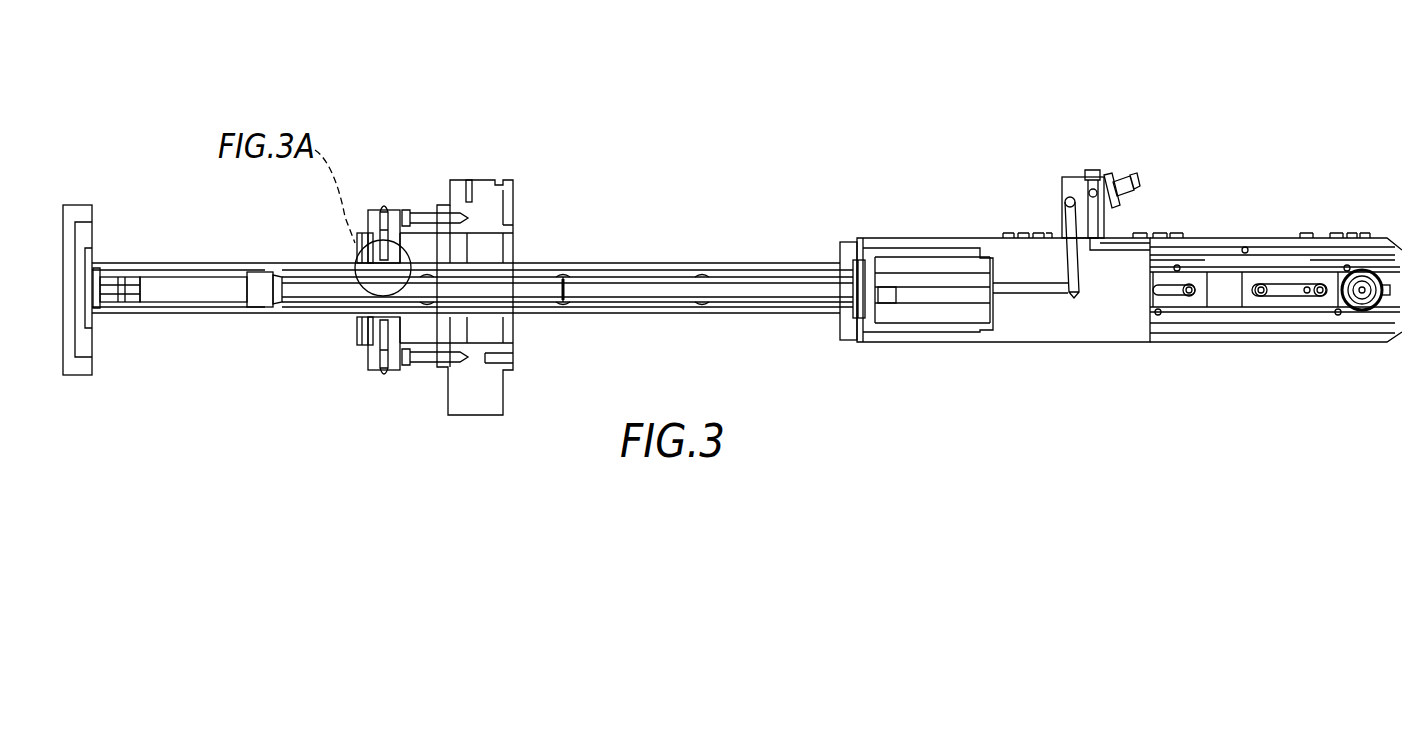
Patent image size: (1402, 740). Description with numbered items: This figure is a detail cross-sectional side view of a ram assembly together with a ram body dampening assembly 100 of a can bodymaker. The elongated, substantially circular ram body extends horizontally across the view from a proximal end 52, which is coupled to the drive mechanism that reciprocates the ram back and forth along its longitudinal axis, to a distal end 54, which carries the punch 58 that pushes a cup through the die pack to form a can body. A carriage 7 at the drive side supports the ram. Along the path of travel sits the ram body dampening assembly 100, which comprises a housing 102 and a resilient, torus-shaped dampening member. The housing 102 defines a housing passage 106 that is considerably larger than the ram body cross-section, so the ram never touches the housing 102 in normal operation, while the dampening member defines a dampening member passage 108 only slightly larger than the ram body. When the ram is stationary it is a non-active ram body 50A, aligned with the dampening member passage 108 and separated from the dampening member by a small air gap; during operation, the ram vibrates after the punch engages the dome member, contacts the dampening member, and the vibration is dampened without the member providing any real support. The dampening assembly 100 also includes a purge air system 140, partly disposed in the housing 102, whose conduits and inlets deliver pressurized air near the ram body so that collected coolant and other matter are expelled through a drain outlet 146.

The purge air system 140 is at (407, 115).
The ram body dampening assembly 100 is at (488, 222).
The ram body dampening assembly housing 102 is at (450, 197).
The dampening member passage 108 is at (428, 246).
The ram body dampening assembly housing passage 106 is at (419, 328).
The drain outlet 146 is at (357, 318).
The distal end 54 is at (282, 263).
The punch 58 is at (197, 313).
The non-active ram body 50A is at (578, 263).
The proximal end 52 is at (823, 263).
The carriage 7 is at (1067, 327).